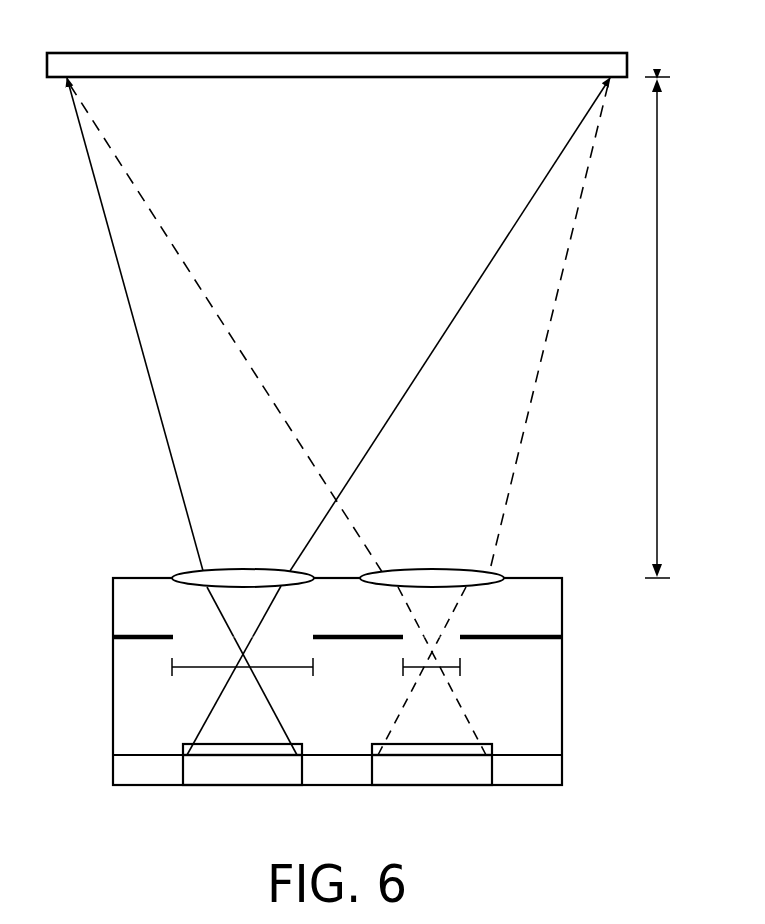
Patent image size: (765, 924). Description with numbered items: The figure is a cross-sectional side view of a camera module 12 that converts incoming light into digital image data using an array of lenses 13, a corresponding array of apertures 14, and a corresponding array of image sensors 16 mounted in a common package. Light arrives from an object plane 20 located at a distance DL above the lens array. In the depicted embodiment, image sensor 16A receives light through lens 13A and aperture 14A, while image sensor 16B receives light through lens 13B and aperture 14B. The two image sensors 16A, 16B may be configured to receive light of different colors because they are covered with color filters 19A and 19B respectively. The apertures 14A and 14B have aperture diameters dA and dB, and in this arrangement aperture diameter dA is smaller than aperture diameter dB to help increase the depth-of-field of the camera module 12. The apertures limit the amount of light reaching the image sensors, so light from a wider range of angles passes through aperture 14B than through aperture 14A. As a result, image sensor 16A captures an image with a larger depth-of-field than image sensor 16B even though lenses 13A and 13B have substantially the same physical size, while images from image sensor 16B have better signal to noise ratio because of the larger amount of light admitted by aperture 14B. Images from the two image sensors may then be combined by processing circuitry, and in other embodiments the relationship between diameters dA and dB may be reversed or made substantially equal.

The object / light source plane 20 is at (508, 58).
The distance between object and lens DL is at (657, 325).
The camera module 12 is at (552, 578).
The array of lenses 13 is at (258, 549).
The lens 13B is at (243, 575).
The lens 13A is at (438, 572).
The array of apertures 14 is at (287, 636).
The aperture 14B is at (200, 630).
The aperture 14A is at (455, 630).
The aperture diameter dB is at (287, 668).
The aperture diameter dA is at (452, 668).
The array of image sensors 16 is at (370, 784).
The image sensor 16B is at (238, 772).
The image sensor 16A is at (437, 772).
The color filter 19B is at (243, 750).
The color filter 19A is at (432, 750).